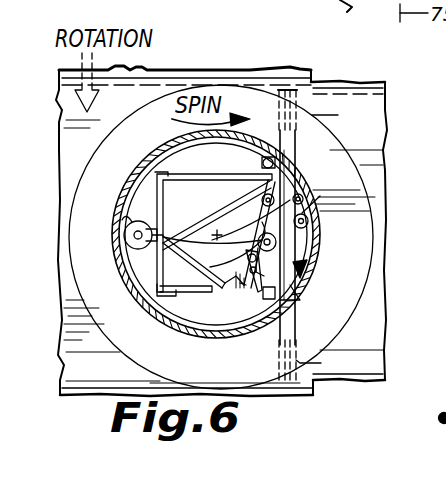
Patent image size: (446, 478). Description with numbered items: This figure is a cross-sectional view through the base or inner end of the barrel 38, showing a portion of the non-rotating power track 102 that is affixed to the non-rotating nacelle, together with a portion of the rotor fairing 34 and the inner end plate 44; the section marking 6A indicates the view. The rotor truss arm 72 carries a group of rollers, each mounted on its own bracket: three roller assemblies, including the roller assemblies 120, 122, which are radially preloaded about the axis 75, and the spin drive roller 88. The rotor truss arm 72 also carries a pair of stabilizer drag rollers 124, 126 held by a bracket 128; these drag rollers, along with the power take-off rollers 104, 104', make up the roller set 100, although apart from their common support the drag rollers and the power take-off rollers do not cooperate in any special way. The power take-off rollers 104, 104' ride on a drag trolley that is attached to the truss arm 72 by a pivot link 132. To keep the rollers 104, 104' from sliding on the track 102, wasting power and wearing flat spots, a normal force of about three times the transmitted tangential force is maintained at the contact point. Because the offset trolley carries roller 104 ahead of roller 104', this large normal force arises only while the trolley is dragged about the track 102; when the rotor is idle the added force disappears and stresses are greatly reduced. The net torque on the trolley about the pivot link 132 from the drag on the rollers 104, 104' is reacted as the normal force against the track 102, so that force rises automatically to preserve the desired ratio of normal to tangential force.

The inner end plate 44 is at (128, 157).
The rotor truss arm 72 is at (204, 161).
The preloaded roller assembly 120 is at (266, 165).
The stabilizer drag roller 124 is at (260, 204).
The axis 75 is at (212, 235).
The spin drive roller 88 is at (122, 220).
The barrel 38 is at (119, 192).
The power take-off roller 104 is at (208, 252).
The power take-off roller 104' is at (330, 224).
The preloaded roller assembly 122 is at (262, 303).
The pivot link 132 is at (230, 283).
The roller set 100 is at (300, 268).
The bracket 128 is at (365, 115).
The stabilizer drag roller 126 is at (318, 175).
The section line 6A is at (383, 332).
The non-rotating power track 102 is at (324, 365).
The rotor fairing 34 is at (106, 384).